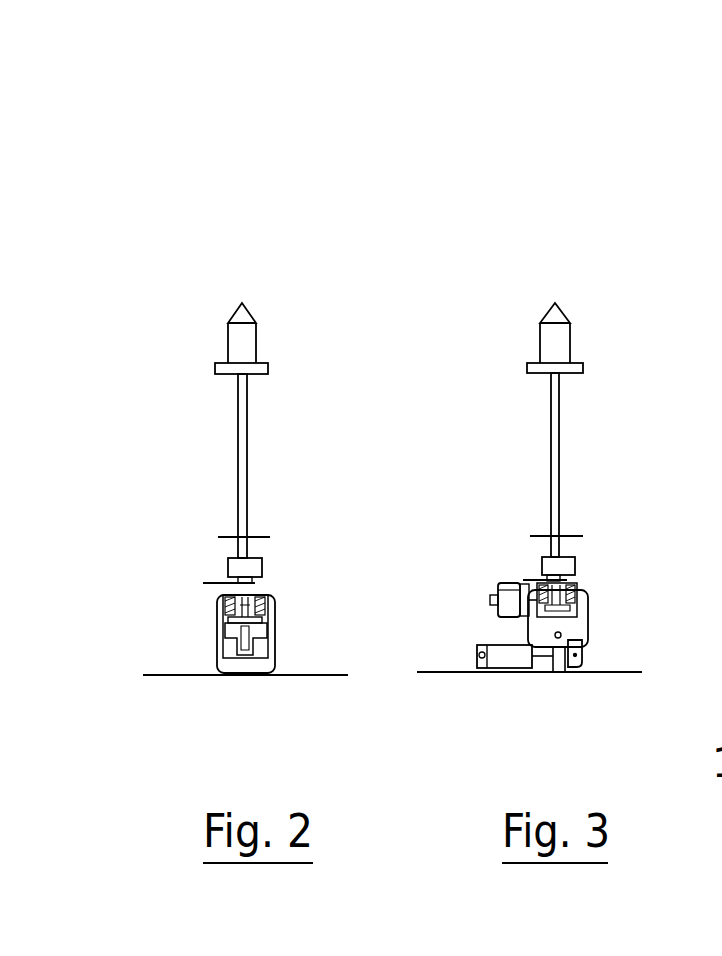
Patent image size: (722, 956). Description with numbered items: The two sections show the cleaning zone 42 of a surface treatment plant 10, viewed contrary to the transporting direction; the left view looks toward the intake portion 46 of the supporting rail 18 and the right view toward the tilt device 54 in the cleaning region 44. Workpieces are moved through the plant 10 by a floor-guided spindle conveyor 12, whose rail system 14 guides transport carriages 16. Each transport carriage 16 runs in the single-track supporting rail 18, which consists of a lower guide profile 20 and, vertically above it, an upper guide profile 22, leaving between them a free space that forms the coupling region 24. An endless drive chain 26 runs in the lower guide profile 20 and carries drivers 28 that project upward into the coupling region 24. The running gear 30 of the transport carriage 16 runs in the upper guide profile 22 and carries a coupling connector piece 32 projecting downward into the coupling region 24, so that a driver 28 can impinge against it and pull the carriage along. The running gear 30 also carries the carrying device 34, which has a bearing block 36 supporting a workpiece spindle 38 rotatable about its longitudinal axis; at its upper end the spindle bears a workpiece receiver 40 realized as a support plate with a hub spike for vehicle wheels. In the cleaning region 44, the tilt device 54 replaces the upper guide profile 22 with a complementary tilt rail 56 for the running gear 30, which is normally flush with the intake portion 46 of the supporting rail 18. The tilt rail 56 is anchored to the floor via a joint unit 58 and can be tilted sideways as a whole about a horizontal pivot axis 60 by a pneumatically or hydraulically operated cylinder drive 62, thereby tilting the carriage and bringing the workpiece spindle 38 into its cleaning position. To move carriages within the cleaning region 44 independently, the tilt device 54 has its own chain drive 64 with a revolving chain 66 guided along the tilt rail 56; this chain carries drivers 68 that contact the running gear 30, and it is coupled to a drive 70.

In FIG. 2, the surface treatment plant 10 is at (308, 135).
In FIG. 3, the surface treatment plant 10 is at (618, 128).
In FIG. 2, the spindle conveyor 12 is at (315, 227).
In FIG. 3, the spindle conveyor 12 is at (618, 223).
In FIG. 2, the rail system 14 is at (213, 680).
In FIG. 3, the rail system 14 is at (480, 678).
In FIG. 2, the transport carriage 16 is at (275, 515).
In FIG. 3, the transport carriage 16 is at (600, 498).
In FIG. 2, the supporting rail 18 is at (283, 622).
In FIG. 2, the lower guide profile 20 is at (236, 650).
In FIG. 2, the upper guide profile 22 is at (223, 596).
In FIG. 2, the coupling region 24 is at (222, 630).
In FIG. 2, the drive chain 26 is at (245, 660).
In FIG. 2, the driver 28 is at (258, 627).
In FIG. 2, the running gear 30 is at (270, 593).
In FIG. 3, the running gear 30 is at (574, 582).
In FIG. 2, the coupling connector piece 32 is at (265, 600).
In FIG. 3, the coupling connector piece 32 is at (574, 623).
In FIG. 2, the carrying device 34 is at (227, 482).
In FIG. 3, the carrying device 34 is at (530, 450).
In FIG. 2, the bearing block 36 is at (254, 567).
In FIG. 3, the bearing block 36 is at (573, 565).
In FIG. 2, the workpiece spindle 38 is at (240, 400).
In FIG. 3, the workpiece spindle 38 is at (555, 400).
In FIG. 2, the workpiece receiver 40 is at (268, 343).
In FIG. 3, the workpiece receiver 40 is at (583, 343).
In FIG. 2, the cleaning zone 42 is at (148, 137).
In FIG. 3, the cleaning zone 42 is at (583, 125).
In FIG. 3, the cleaning region 44 is at (547, 207).
In FIG. 2, the intake portion 46 is at (175, 683).
In FIG. 3, the tilt device 54 is at (573, 678).
In FIG. 3, the tilt rail 56 is at (540, 583).
In FIG. 3, the joint unit 58 is at (550, 643).
In FIG. 3, the pivot axis 60 is at (588, 627).
In FIG. 3, the cylinder drive 62 is at (463, 653).
In FIG. 3, the chain drive 64 is at (512, 573).
In FIG. 3, the chain 66 is at (522, 623).
In FIG. 3, the driver 68 is at (522, 580).
In FIG. 3, the drive 70 is at (497, 597).